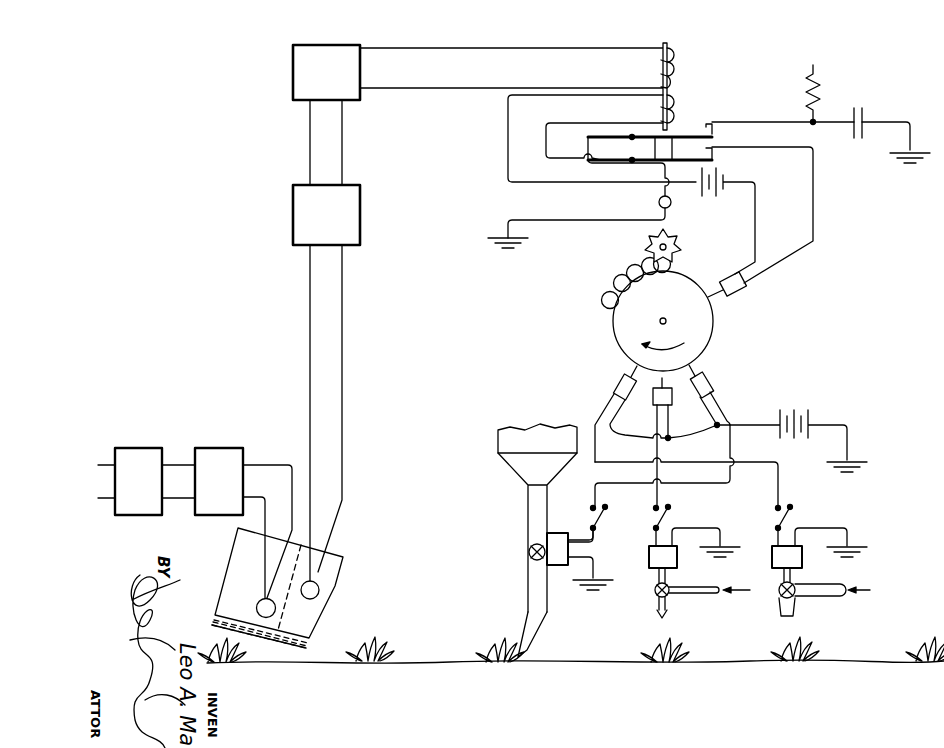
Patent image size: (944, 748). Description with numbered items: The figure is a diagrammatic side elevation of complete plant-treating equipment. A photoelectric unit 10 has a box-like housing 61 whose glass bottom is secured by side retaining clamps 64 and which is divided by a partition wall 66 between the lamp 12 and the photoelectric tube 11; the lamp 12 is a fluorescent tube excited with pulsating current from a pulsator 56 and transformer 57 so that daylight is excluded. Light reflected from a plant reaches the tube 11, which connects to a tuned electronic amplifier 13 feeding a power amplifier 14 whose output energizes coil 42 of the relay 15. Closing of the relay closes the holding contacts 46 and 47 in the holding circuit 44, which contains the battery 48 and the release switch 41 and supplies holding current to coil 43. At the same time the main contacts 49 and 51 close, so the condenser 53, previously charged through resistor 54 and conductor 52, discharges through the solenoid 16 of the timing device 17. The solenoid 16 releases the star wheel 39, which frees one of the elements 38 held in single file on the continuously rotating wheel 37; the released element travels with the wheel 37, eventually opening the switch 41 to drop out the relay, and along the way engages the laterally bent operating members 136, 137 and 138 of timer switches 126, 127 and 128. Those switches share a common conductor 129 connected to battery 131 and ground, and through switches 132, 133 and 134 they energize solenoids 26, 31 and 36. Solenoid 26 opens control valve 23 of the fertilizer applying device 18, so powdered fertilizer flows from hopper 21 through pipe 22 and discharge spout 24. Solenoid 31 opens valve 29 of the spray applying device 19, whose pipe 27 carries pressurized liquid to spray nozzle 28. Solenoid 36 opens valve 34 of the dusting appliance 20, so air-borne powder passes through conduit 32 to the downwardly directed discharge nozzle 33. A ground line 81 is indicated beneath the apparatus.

The photoelectric unit 10 is at (346, 560).
The photoelectric tube 11 is at (319, 590).
The lamp 12 is at (257, 603).
The electronic amplifier 13 is at (293, 220).
The power amplifier 14 is at (293, 72).
The relay 15 is at (672, 90).
The solenoid 16 is at (660, 203).
The timing device 17 is at (612, 318).
The fertilizer applying device 18 is at (527, 491).
The spray applying device 19 is at (654, 594).
The dusting appliance 20 is at (778, 574).
The hopper 21 is at (498, 438).
The pipe 22 is at (528, 520).
The control valve 23 is at (529, 550).
The discharge spout 24 is at (536, 622).
The electric solenoid 26 is at (560, 533).
The pipe 27 is at (688, 593).
The spray nozzle 28 is at (657, 614).
The valve 29 is at (655, 587).
The electrical solenoid 31 is at (649, 553).
The conduit 32 is at (820, 594).
The discharge nozzle 33 is at (794, 614).
The valve 34 is at (795, 588).
The solenoid 36 is at (772, 553).
The wheel 37 is at (714, 319).
The elements 38 is at (604, 290).
The star wheel 39 is at (683, 244).
The release switch 41 is at (741, 286).
The coil 42 is at (675, 62).
The coil 43 is at (676, 108).
The holding circuit 44 is at (514, 170).
The movable relay contact 46 is at (716, 160).
The stationary relay contact 47 is at (716, 140).
The battery 48 is at (728, 176).
The movable contact 49 is at (720, 130).
The stationary contact 51 is at (710, 126).
The conductor 52 is at (821, 132).
The condenser 53 is at (864, 114).
The resistor 54 is at (818, 78).
The pulsator 56 is at (140, 448).
The transformer 57 is at (222, 448).
The box-like housing 61 is at (238, 544).
The side retaining clamps 64 is at (308, 637).
The partition wall 66 is at (287, 611).
The ground 81 is at (432, 666).
The timer switch 126 is at (713, 380).
The timer switch 127 is at (672, 400).
The timer switch 128 is at (612, 382).
The common conductor 129 is at (618, 430).
The battery 131 is at (792, 412).
The switch 132 is at (604, 522).
The switch 133 is at (668, 522).
The switch 134 is at (790, 522).
The operating member 136 is at (700, 368).
The operating member 137 is at (663, 343).
The operating member 138 is at (628, 370).